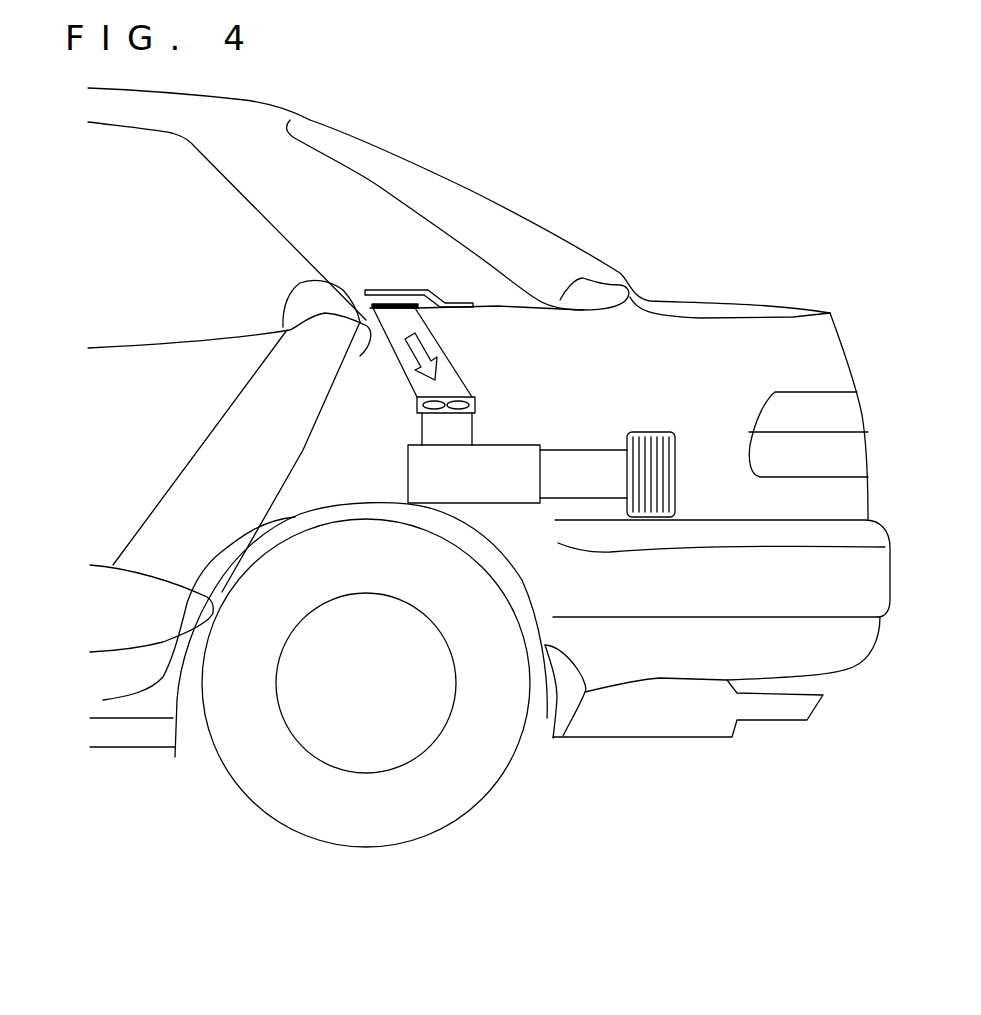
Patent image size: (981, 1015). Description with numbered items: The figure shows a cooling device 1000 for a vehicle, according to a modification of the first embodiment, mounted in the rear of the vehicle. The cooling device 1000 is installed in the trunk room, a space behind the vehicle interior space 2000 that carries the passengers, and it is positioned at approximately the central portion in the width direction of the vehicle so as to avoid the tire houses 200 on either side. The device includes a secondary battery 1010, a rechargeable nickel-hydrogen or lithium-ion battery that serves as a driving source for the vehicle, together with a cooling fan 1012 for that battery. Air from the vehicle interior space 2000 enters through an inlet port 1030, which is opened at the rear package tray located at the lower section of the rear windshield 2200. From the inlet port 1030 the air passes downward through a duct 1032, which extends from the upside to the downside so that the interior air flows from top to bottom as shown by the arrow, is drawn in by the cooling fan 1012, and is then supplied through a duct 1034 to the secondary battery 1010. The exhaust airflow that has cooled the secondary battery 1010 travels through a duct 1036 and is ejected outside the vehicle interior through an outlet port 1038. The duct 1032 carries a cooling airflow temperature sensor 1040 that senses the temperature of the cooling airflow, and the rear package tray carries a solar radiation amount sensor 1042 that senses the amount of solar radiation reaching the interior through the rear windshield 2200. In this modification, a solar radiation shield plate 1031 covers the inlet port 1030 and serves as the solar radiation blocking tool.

The tire house 200 is at (522, 575).
The vehicle interior space 2000 is at (489, 417).
The rear windshield 2200 is at (413, 157).
The cooling device for a vehicle 1000 is at (540, 380).
The secondary battery 1010 is at (502, 452).
The cooling fan 1012 is at (450, 396).
The inlet port 1030 is at (394, 304).
The solar radiation shield plate 1031 is at (387, 290).
The duct 1032 is at (415, 380).
The duct 1034 is at (472, 432).
The duct 1036 is at (562, 452).
The outlet port 1038 is at (657, 432).
The cooling airflow temperature sensor 1040 is at (412, 323).
The solar radiation amount sensor 1042 is at (500, 300).